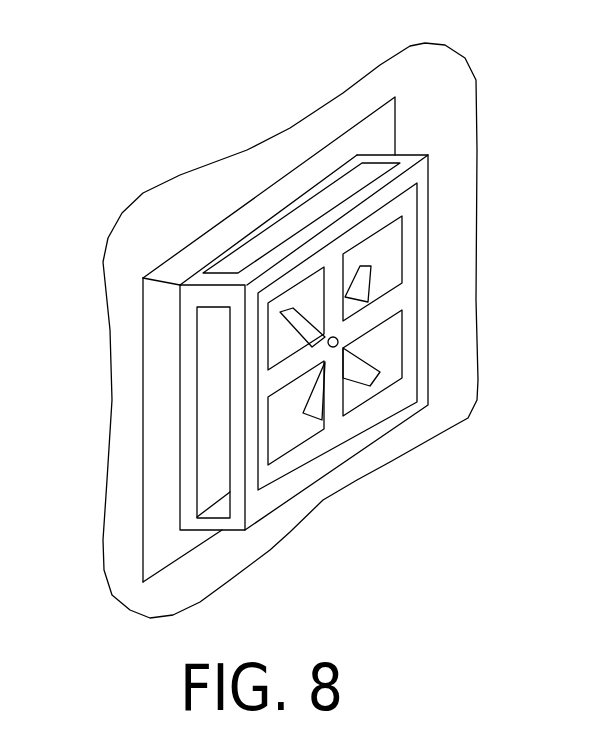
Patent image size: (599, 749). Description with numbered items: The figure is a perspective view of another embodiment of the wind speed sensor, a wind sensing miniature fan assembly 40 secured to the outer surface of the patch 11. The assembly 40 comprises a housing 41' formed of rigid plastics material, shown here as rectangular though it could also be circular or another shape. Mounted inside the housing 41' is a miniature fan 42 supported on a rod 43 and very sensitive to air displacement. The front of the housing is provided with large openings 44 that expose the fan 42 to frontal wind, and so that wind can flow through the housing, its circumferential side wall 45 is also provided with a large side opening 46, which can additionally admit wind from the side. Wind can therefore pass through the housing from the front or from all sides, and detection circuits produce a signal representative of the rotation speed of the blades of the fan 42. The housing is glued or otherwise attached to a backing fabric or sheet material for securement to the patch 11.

The patch 11 is at (208, 193).
The wind sensing miniature fan assembly 40 is at (434, 120).
The housing 41' is at (403, 342).
The miniature fan 42 is at (370, 279).
The rod 43 is at (341, 340).
The openings 44 is at (290, 438).
The circumferential side wall 45 is at (197, 296).
The side opening 46 is at (338, 196).